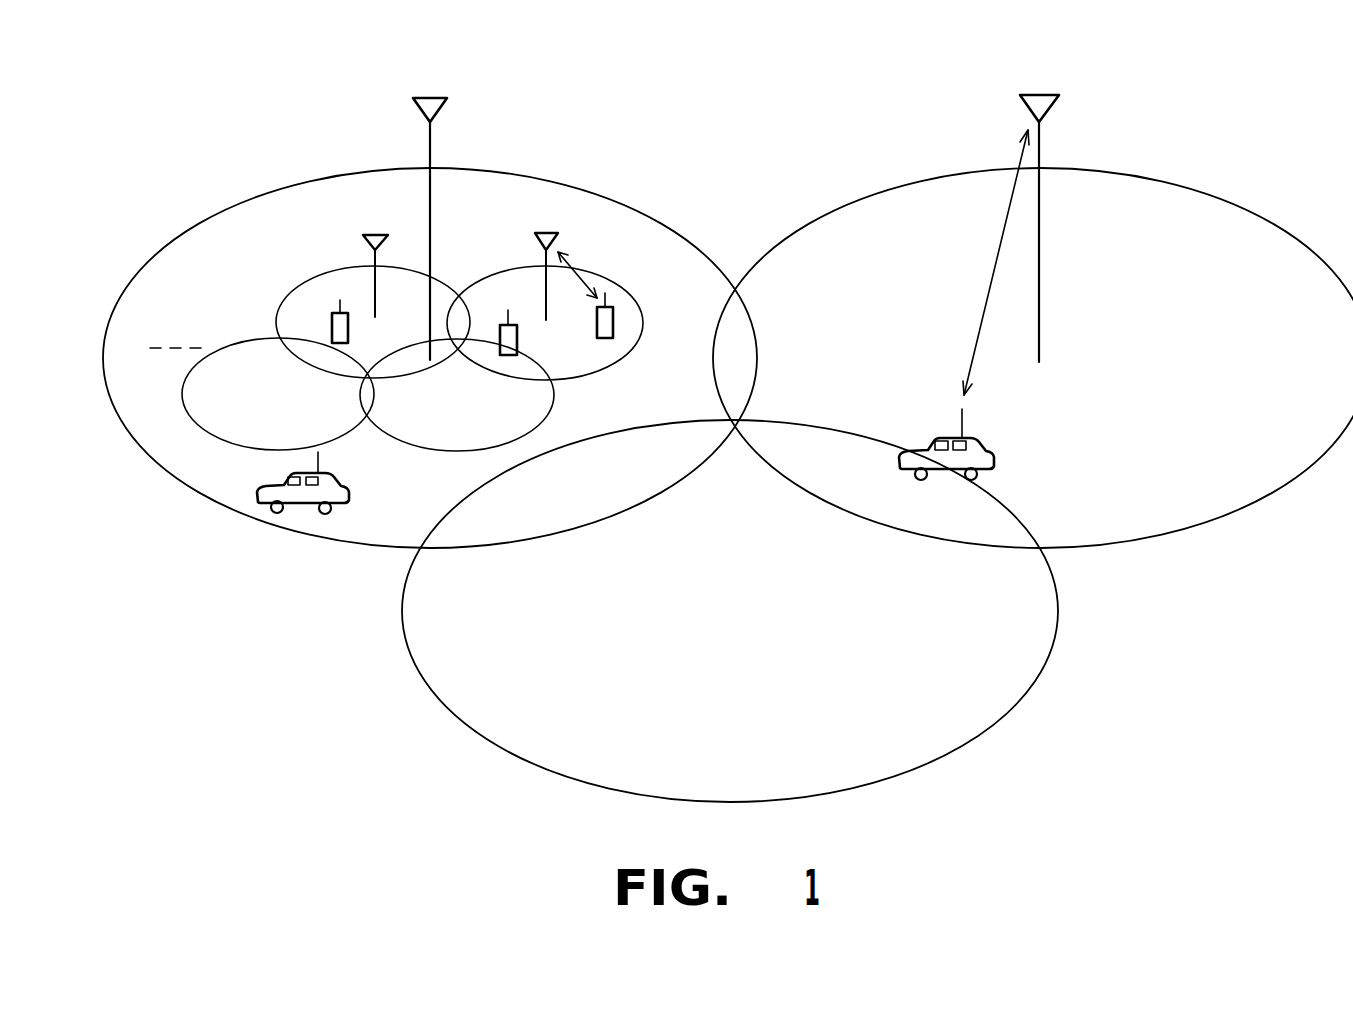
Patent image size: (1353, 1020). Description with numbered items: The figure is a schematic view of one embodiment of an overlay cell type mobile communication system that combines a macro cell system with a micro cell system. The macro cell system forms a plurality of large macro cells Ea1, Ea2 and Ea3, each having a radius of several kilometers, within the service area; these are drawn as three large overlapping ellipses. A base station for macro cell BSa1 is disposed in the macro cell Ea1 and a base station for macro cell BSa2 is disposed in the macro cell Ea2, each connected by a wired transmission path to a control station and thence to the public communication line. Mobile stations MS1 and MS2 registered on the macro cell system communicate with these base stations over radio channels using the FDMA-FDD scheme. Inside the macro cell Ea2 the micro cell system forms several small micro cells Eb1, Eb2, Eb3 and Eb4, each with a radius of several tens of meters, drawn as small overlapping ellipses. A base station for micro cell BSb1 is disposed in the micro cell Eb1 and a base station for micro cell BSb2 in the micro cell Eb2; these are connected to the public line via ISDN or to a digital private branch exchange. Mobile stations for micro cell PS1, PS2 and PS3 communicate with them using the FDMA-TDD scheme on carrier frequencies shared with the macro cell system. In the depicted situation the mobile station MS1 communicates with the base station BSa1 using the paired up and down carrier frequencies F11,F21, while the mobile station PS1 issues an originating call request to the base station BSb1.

The macro cell Ea1 is at (1248, 211).
The macro cell Ea2 is at (238, 204).
The macro cell Ea3 is at (1043, 668).
The micro cell Eb1 is at (496, 276).
The micro cell Eb2 is at (311, 279).
The micro cell Eb3 is at (532, 431).
The micro cell Eb4 is at (183, 396).
The base station for macro cell BSa1 is at (1036, 93).
The base station for macro cell BSa2 is at (430, 96).
The base station for micro cell BSb1 is at (549, 234).
The base station for micro cell BSb2 is at (375, 233).
The mobile station for micro cell PS1 is at (605, 339).
The mobile station for micro cell PS2 is at (508, 356).
The mobile station for micro cell PS3 is at (337, 344).
The mobile station MS1 is at (994, 462).
The mobile station MS2 is at (348, 490).
The up carrier frequency and down carrier frequency F11,F21 is at (948, 262).